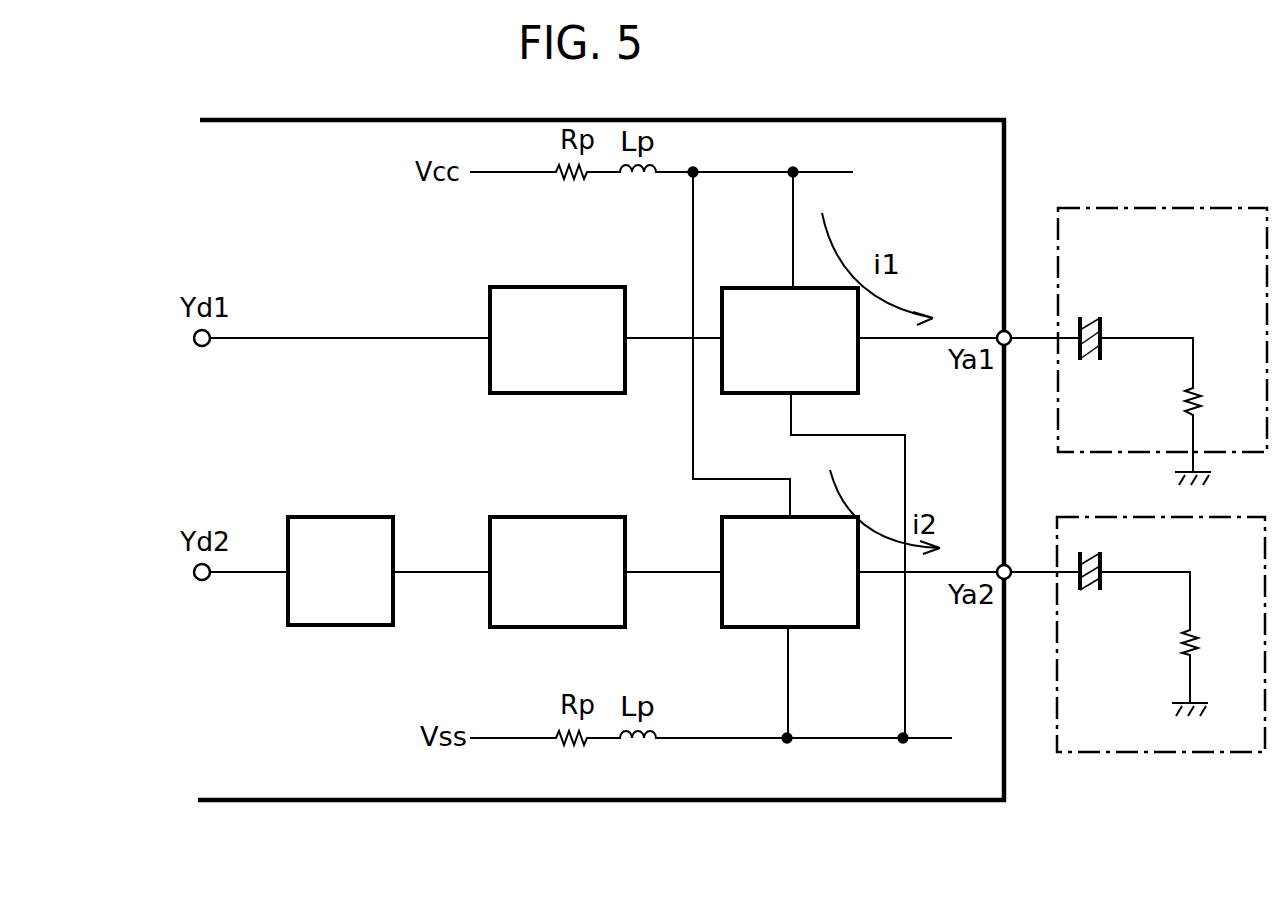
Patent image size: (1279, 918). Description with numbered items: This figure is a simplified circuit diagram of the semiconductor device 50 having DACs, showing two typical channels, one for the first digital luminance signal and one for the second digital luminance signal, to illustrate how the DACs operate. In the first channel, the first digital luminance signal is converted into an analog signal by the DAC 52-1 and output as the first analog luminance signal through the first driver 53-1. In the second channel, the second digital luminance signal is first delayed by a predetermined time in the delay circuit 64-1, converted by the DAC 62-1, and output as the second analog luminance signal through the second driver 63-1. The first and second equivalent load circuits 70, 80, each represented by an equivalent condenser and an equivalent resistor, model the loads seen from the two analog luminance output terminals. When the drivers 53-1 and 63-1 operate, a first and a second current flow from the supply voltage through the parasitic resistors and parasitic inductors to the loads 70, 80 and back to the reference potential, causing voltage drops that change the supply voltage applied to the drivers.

The semiconductor device 50 is at (858, 120).
The DAC 52-1 is at (513, 287).
The first driver 53-1 is at (747, 288).
The DAC 62-1 is at (508, 517).
The second driver 63-1 is at (740, 627).
The delay circuit 64-1 is at (315, 517).
The first equivalent load circuit 70 is at (1243, 208).
The second equivalent load circuit 80 is at (1228, 752).